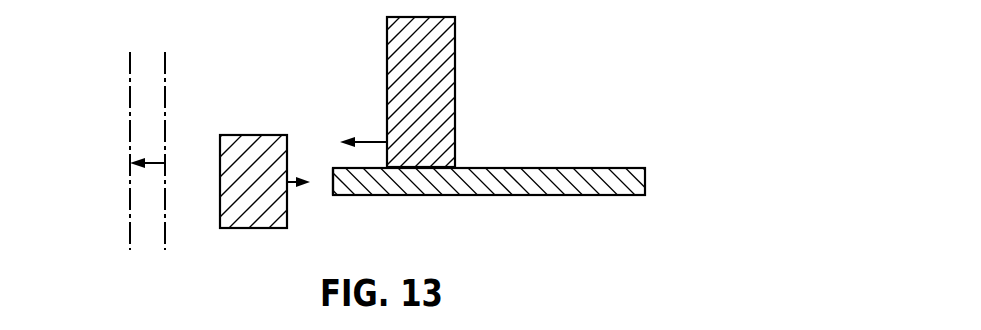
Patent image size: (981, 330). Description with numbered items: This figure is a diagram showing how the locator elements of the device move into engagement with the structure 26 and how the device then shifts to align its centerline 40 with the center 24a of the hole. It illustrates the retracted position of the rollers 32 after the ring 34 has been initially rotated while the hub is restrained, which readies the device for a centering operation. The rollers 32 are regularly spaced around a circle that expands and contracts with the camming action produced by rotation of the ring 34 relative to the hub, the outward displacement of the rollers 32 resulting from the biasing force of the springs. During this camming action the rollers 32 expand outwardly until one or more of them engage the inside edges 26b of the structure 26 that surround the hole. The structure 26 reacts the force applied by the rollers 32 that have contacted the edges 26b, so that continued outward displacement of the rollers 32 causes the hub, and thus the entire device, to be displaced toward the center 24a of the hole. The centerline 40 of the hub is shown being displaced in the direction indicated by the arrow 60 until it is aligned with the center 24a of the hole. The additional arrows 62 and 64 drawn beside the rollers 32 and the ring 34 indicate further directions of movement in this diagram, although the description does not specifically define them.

The center of the hole 24a is at (130, 84).
The centerline of the hub 40 is at (165, 83).
The arrow 60 is at (153, 165).
The roller 32 is at (254, 157).
The displacement direction arrow 62 is at (289, 181).
The ring 34 is at (430, 45).
The displacement direction arrow 64 is at (370, 142).
The structure 26 is at (535, 180).
The inside edge of the structure 26b is at (332, 183).